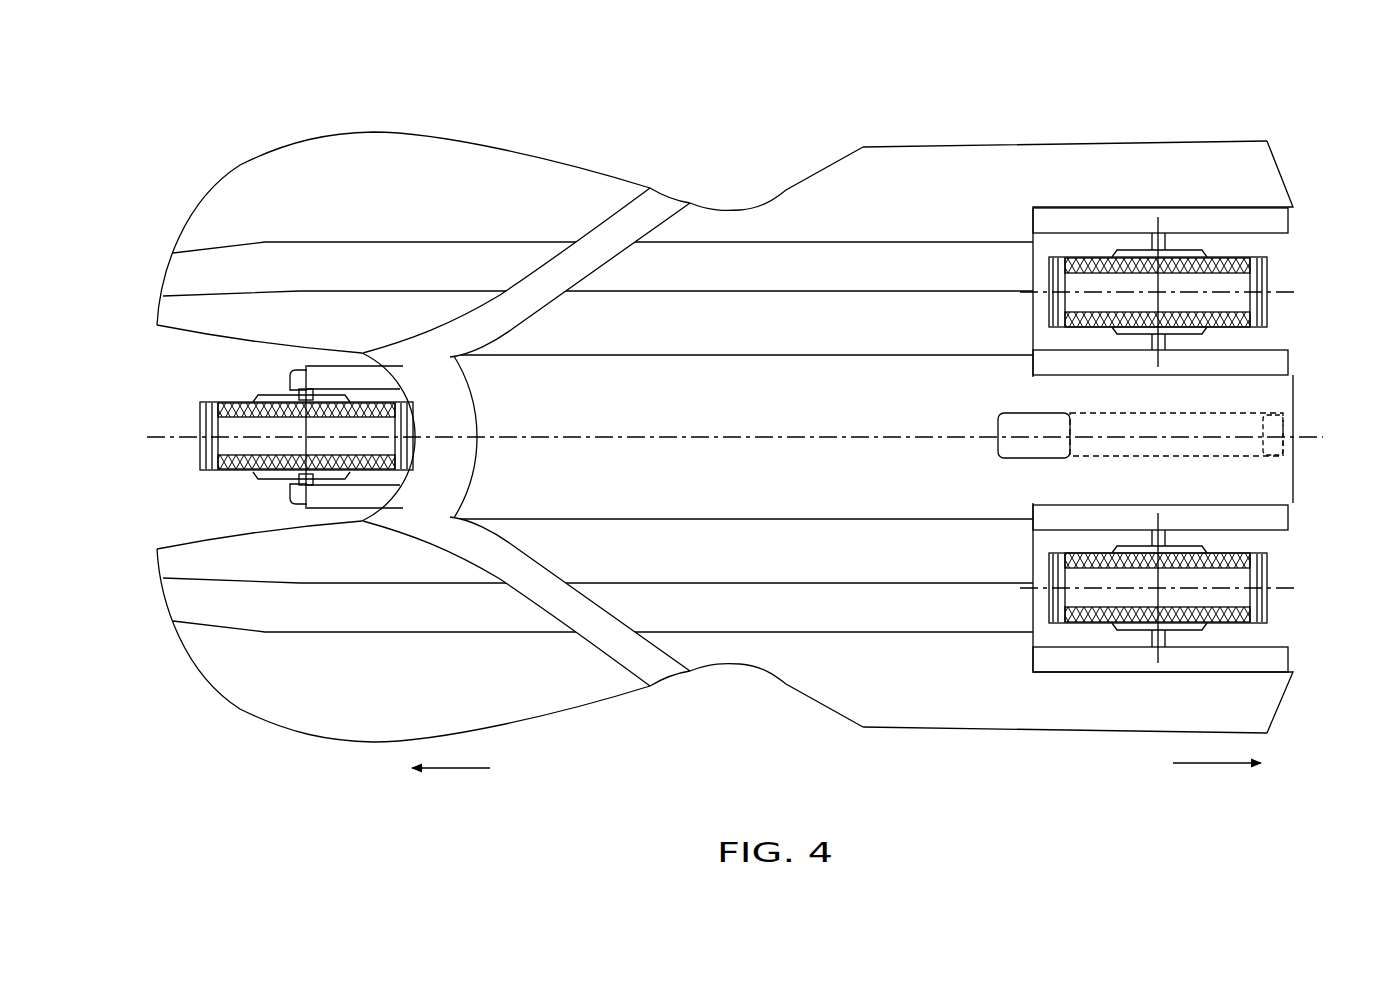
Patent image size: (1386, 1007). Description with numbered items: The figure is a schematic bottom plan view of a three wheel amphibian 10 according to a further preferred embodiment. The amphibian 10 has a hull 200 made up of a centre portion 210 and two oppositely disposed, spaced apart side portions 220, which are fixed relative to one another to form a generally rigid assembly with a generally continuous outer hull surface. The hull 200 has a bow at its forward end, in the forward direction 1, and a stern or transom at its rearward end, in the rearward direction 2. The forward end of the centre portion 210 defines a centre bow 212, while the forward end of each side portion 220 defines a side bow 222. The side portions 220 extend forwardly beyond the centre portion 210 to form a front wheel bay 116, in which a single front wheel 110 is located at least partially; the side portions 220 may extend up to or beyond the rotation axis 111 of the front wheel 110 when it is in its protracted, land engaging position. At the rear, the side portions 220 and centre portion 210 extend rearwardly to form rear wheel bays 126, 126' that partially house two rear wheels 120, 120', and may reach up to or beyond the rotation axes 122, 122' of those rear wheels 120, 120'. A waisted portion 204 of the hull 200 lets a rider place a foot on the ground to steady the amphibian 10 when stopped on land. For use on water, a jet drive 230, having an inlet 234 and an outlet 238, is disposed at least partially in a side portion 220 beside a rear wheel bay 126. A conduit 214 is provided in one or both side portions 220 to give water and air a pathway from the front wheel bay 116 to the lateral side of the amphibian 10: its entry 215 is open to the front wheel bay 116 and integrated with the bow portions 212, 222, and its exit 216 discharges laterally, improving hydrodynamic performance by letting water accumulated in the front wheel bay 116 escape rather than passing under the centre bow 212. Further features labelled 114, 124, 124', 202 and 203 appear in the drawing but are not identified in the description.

The amphibian 10 is at (678, 141).
The front wheel 110 is at (198, 450).
The rotation axis of the front wheel 111 is at (318, 500).
The roller end 114 is at (198, 430).
The front wheel bay 116 is at (176, 371).
The rear wheel 120 is at (1176, 578).
The rear wheel 120' is at (1180, 281).
The rotation axis of the rear wheel 122 is at (1078, 595).
The rotation axis of the rear wheel 122' is at (1078, 302).
The roller end cap 124 is at (1191, 588).
The roller end cap (upper) 124' is at (1197, 292).
The rear wheel bay 126 is at (1197, 588).
The rear wheel bay 126' is at (1202, 291).
The hull 200 is at (1111, 136).
The outer surface 202 is at (963, 147).
The central axis 203 is at (905, 436).
The waisted portion 204 is at (783, 145).
The centre portion 210 is at (763, 482).
The centre bow 212 is at (450, 408).
The conduit 214 is at (510, 322).
The entry 215 is at (430, 367).
The exit 216 is at (678, 184).
The side portion 220 is at (890, 335).
The side bow 222 is at (178, 272).
The jet drive 230 is at (1228, 413).
The inlet 234 is at (1020, 422).
The outlet 238 is at (1272, 447).
The forward direction 1 is at (451, 782).
The rearward direction 2 is at (1217, 780).